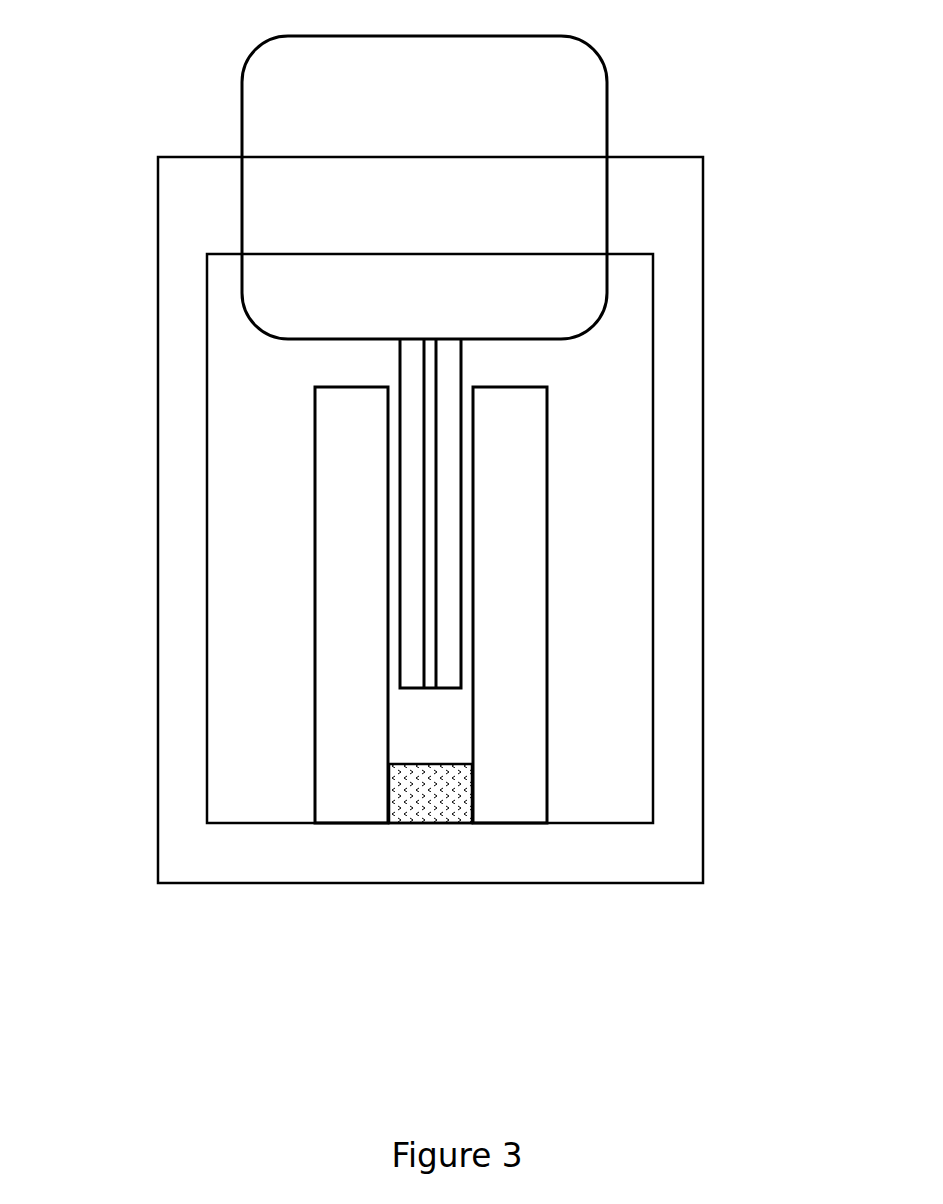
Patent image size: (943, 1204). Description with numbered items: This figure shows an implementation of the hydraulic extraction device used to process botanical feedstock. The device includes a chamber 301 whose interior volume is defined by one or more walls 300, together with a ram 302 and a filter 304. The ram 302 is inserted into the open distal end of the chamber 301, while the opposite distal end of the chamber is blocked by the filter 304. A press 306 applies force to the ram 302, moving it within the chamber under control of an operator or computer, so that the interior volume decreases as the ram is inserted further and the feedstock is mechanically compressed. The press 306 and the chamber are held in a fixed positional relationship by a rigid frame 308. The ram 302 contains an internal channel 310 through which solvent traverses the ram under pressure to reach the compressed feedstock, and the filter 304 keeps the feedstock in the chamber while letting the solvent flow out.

The walls 300 is at (332, 526).
The chamber 301 is at (400, 716).
The ram 302 is at (394, 363).
The filter 304 is at (405, 828).
The press 306 is at (409, 208).
The rigid frame 308 is at (162, 527).
The internal channel 310 is at (443, 363).